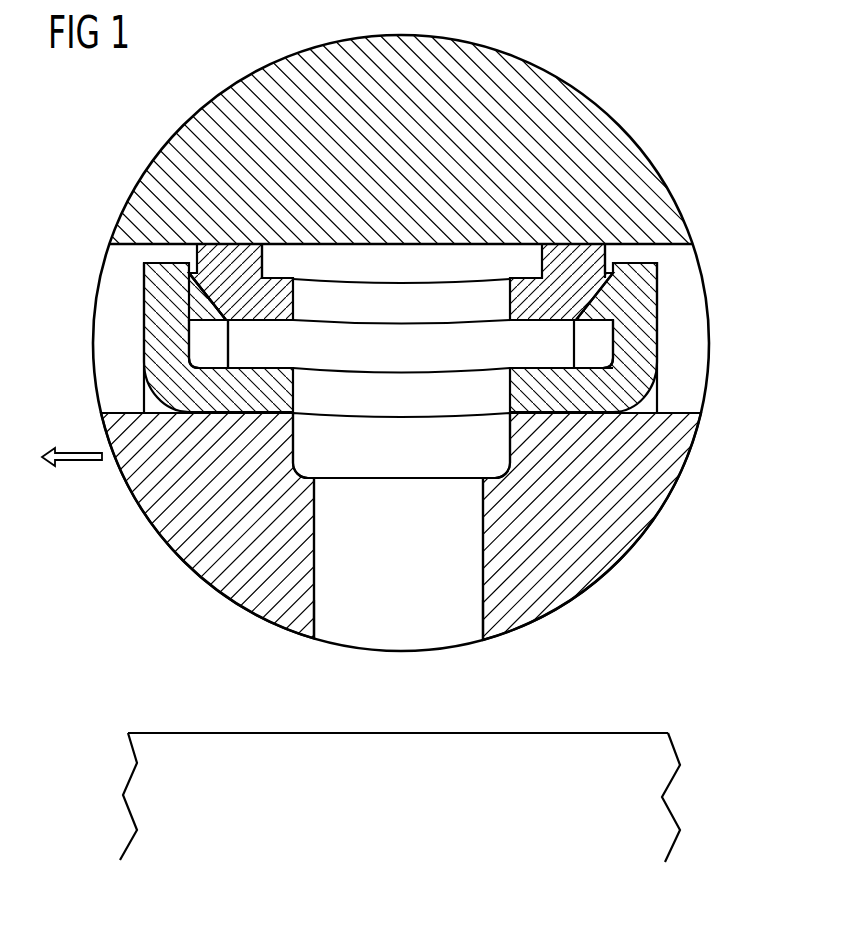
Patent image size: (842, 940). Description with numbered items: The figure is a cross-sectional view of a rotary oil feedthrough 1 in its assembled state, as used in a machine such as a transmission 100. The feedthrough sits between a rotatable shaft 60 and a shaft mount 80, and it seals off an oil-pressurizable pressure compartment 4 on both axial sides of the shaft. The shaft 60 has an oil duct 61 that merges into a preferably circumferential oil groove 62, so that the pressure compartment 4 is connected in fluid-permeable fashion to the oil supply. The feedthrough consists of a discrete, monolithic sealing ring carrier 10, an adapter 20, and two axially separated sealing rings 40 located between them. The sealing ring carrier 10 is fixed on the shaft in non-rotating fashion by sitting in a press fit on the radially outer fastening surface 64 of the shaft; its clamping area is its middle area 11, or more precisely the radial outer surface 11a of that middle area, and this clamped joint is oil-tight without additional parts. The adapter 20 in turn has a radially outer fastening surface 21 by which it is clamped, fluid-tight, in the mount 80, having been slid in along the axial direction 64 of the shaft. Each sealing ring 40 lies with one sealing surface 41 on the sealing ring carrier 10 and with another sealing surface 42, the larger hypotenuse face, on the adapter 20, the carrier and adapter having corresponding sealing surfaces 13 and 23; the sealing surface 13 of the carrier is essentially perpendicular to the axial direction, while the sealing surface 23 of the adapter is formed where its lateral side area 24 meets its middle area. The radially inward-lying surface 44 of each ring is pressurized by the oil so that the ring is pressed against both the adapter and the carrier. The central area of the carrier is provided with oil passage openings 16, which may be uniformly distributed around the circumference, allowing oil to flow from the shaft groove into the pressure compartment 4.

The rotary oil feedthrough 1 is at (138, 605).
The shaft mount 80 is at (570, 108).
The adapter 20 is at (587, 247).
The fastening surface 21 is at (228, 236).
The sealing surface 42 is at (290, 276).
The sealing ring 40 is at (602, 307).
The sealing ring carrier 10 is at (650, 283).
The sealing surface 41 is at (142, 277).
The sealing surface 13 is at (190, 312).
The sealing surface 23 is at (207, 302).
The pressure compartment 4 is at (593, 348).
The side area 24 is at (398, 308).
The radially inward-lying surface 44 is at (233, 332).
The middle area 11 is at (540, 378).
The shaft 60 is at (585, 560).
The oil passage opening 16 is at (358, 408).
The oil groove 62 is at (425, 465).
The oil duct 61 is at (402, 638).
The radial outer surface 11a is at (568, 418).
The fastening surface / axial direction 64 is at (73, 461).
The transmission 100 is at (424, 813).